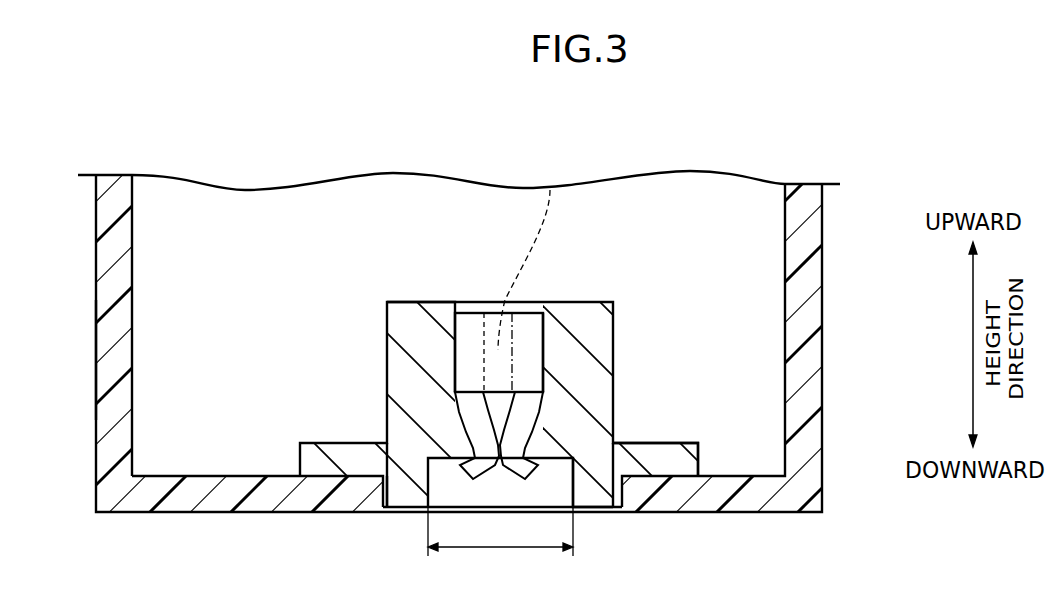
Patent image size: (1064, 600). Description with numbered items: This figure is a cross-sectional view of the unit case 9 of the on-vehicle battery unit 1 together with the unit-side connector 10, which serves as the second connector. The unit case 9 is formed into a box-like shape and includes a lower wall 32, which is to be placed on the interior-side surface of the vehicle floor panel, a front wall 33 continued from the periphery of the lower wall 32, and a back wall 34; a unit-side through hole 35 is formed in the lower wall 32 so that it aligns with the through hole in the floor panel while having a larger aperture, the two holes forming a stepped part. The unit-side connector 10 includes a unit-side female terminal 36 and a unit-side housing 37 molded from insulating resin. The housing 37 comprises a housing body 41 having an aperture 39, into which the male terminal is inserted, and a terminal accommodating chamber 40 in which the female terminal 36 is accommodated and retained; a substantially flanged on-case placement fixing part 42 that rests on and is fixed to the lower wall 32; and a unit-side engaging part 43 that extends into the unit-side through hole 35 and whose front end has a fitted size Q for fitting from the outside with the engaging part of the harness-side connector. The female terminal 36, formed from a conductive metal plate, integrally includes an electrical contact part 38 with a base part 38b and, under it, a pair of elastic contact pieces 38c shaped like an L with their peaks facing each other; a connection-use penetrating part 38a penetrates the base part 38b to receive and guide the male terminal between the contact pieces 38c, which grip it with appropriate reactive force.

The on-vehicle battery unit 1 is at (532, 340).
The unit case 9 is at (88, 342).
The unit-side connector 10 is at (583, 294).
The lower wall 32 is at (230, 483).
The front wall 33 is at (103, 427).
The back wall 34 is at (810, 313).
The unit-side through hole 35 is at (387, 510).
The unit-side female terminal 36 is at (527, 358).
The unit-side housing 37 is at (578, 325).
The electrical contact part 38 is at (609, 306).
The connection-use penetrating part 38a is at (550, 190).
The base part 38b is at (480, 312).
The elastic contact pieces 38c is at (517, 466).
The aperture 39 is at (462, 302).
The terminal accommodating chamber 40 is at (458, 437).
The housing body 41 is at (415, 312).
The on-case placement fixing part 42 is at (673, 450).
The unit-side engaging part 43 is at (598, 493).
The fitted size Q is at (500, 542).